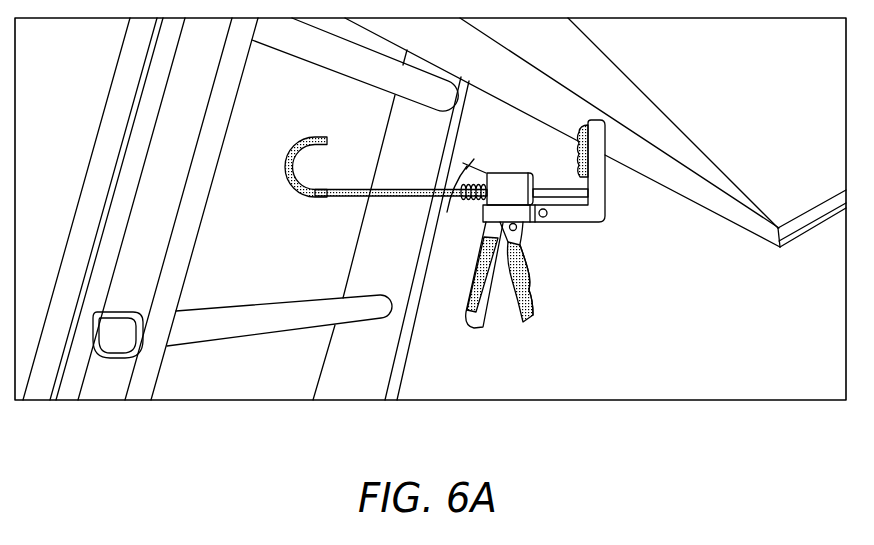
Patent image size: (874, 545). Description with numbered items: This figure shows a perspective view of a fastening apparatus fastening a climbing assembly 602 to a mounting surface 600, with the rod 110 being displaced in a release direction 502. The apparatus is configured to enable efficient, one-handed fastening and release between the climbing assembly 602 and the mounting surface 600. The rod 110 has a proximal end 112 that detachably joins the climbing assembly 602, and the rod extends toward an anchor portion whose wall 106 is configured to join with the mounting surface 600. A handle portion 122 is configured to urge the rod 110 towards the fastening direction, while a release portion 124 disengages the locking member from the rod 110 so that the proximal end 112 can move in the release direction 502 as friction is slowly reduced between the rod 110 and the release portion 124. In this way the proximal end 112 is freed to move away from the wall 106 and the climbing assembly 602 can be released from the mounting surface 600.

The wall 106 is at (604, 178).
The rod 110 is at (392, 190).
The proximal end 112 is at (297, 141).
The handle portion 122 is at (469, 322).
The release portion 124 is at (470, 163).
The release direction 502 is at (540, 362).
The mounting surface 600 is at (650, 165).
The climbing assembly 602 is at (203, 175).